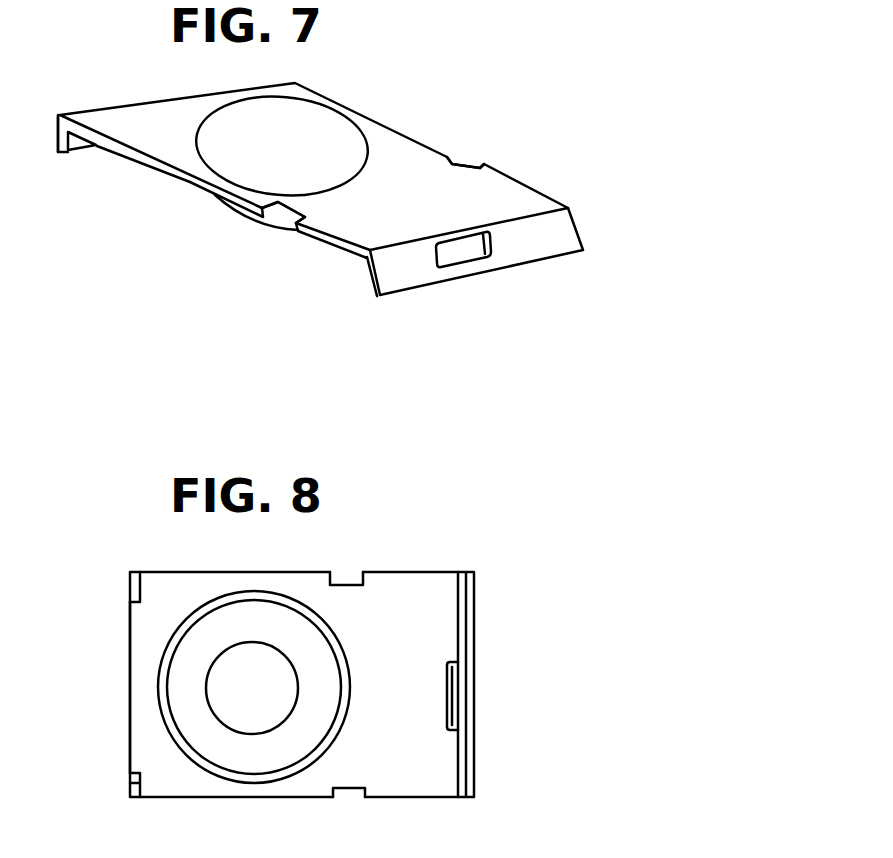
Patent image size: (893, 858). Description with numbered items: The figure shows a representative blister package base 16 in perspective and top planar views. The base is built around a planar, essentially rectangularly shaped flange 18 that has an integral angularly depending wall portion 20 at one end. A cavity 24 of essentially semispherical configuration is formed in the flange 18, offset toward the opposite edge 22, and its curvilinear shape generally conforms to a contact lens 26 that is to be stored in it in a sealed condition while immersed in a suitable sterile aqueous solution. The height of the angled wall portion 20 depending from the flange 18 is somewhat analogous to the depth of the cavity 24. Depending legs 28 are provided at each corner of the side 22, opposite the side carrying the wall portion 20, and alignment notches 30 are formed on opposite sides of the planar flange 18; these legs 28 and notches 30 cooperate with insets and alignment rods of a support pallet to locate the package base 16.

In FIG. 7, the blister package base 16 is at (408, 112).
In FIG. 8, the blister package base 16 is at (488, 533).
In FIG. 7, the flange 18 is at (433, 215).
In FIG. 8, the flange 18 is at (413, 681).
In FIG. 7, the angularly depending wall portion 20 is at (415, 288).
In FIG. 8, the angularly depending wall portion 20 is at (475, 750).
In FIG. 7, the opposite edge 22 is at (181, 97).
In FIG. 8, the opposite edge 22 is at (130, 683).
In FIG. 7, the cavity 24 is at (300, 161).
In FIG. 8, the cavity 24 is at (227, 603).
In FIG. 8, the contact lens 26 is at (253, 642).
In FIG. 7, the depending legs 28 is at (58, 153).
In FIG. 8, the depending legs 28 is at (130, 585).
In FIG. 7, the alignment notches 30 is at (467, 155).
In FIG. 8, the alignment notches 30 is at (351, 565).